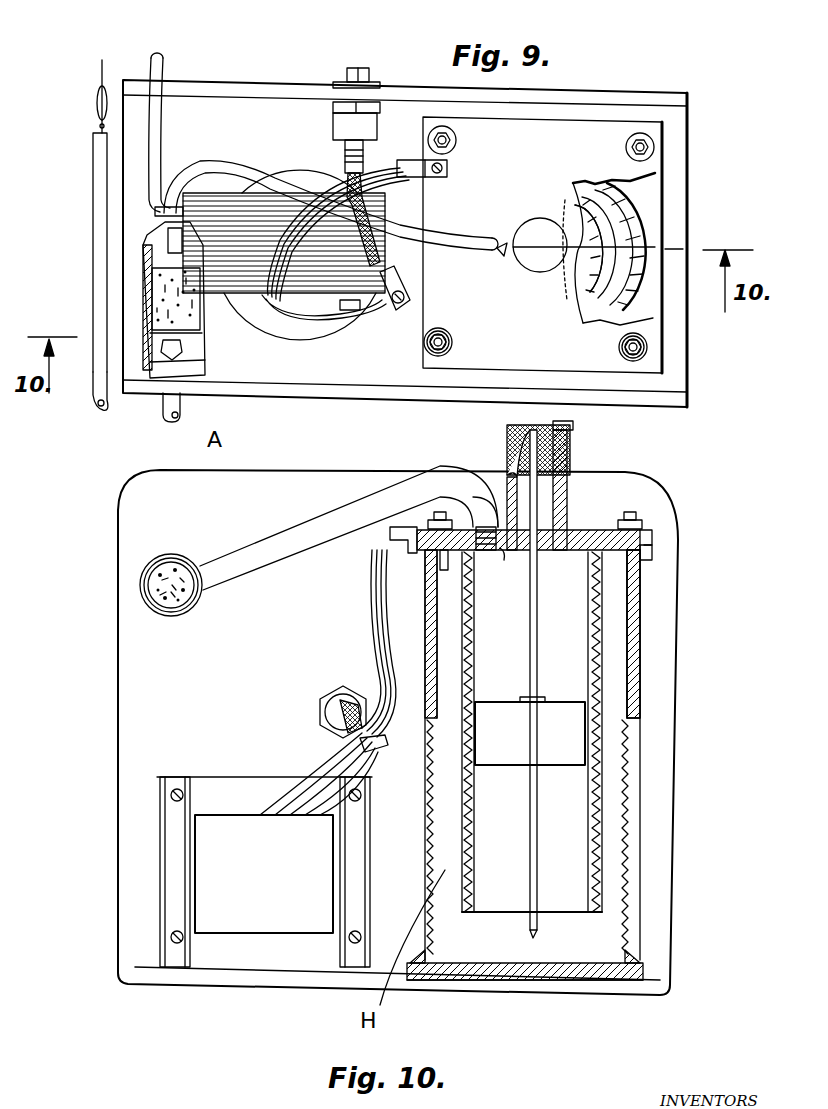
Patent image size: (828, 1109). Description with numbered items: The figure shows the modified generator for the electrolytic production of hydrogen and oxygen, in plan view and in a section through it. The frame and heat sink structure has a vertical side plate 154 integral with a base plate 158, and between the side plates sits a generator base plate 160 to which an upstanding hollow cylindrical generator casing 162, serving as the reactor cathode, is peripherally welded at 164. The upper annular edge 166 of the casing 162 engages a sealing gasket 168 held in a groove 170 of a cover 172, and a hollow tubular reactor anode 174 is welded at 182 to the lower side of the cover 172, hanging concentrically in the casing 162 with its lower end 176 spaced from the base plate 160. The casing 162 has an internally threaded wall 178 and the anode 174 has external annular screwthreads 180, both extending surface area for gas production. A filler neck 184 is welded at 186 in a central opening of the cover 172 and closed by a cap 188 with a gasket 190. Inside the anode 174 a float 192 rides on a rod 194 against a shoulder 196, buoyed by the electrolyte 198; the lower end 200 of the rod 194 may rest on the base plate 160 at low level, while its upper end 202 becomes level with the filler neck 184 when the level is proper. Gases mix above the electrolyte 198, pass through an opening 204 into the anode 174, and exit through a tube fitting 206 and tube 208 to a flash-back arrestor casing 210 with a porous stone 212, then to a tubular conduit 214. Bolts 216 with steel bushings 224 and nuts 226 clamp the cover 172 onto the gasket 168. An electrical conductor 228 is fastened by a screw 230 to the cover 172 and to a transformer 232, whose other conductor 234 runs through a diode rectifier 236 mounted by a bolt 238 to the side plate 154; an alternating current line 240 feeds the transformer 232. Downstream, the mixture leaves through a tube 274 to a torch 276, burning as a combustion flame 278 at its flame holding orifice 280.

In FIG. 10, the side plate 154 is at (126, 700).
In FIG. 10, the base plate 158 is at (235, 968).
In FIG. 10, the generator base plate 160 is at (555, 978).
In FIG. 9, the generator casing 162 is at (637, 217).
In FIG. 10, the generator casing 162 is at (625, 868).
In FIG. 10, the peripheral weld 164 is at (650, 957).
In FIG. 10, the upper annular edge 166 is at (642, 560).
In FIG. 10, the sealing gasket 168 is at (632, 527).
In FIG. 10, the groove 170 is at (644, 543).
In FIG. 9, the cover 172 is at (578, 137).
In FIG. 10, the cover 172 is at (583, 536).
In FIG. 9, the reactor anode 174 is at (650, 246).
In FIG. 10, the lower end of anode 176 is at (480, 965).
In FIG. 10, the internally threaded wall 178 is at (613, 813).
In FIG. 10, the external annular screwthreads 180 is at (605, 693).
In FIG. 10, the weld 182 is at (440, 565).
In FIG. 10, the filler neck 184 is at (558, 500).
In FIG. 10, the peripheral weld 186 is at (507, 548).
In FIG. 9, the cap 188 is at (545, 219).
In FIG. 10, the cap 188 is at (507, 448).
In FIG. 10, the gasket 190 is at (570, 433).
In FIG. 9, the float 192 is at (588, 317).
In FIG. 10, the float 192 is at (590, 727).
In FIG. 10, the rod 194 is at (533, 775).
In FIG. 10, the shoulder 196 is at (540, 697).
In FIG. 10, the electrolyte 198 is at (435, 720).
In FIG. 10, the lower end of rod 200 is at (533, 931).
In FIG. 10, the upper end of rod 202 is at (509, 433).
In FIG. 10, the opening 204 is at (557, 680).
In FIG. 10, the tube fitting 206 is at (480, 503).
In FIG. 9, the tube 208 is at (452, 248).
In FIG. 10, the tube 208 is at (372, 497).
In FIG. 9, the flash-back arrestor casing 210 is at (143, 250).
In FIG. 10, the flash-back arrestor casing 210 is at (150, 608).
In FIG. 9, the porous stone 212 is at (157, 298).
In FIG. 10, the porous stone 212 is at (183, 559).
In FIG. 9, the tubular conduit 214 is at (163, 408).
In FIG. 9, the bolts 216 is at (449, 140).
In FIG. 9, the steel bushings 224 is at (432, 355).
In FIG. 9, the nuts 226 is at (445, 351).
In FIG. 9, the electrical conductor 228 is at (392, 176).
In FIG. 10, the electrical conductor 228 is at (374, 550).
In FIG. 9, the screw 230 is at (447, 168).
In FIG. 10, the screw 230 is at (426, 519).
In FIG. 9, the transformer 232 is at (263, 180).
In FIG. 10, the transformer 232 is at (222, 815).
In FIG. 9, the conductor 234 is at (302, 322).
In FIG. 10, the conductor 234 is at (345, 748).
In FIG. 9, the diode rectifier 236 is at (337, 120).
In FIG. 10, the diode rectifier 236 is at (330, 700).
In FIG. 9, the bolt 238 is at (370, 76).
In FIG. 9, the alternating current line 240 is at (166, 66).
In FIG. 9, the tube 274 is at (96, 393).
In FIG. 9, the torch 276 is at (97, 195).
In FIG. 9, the combustion flame 278 is at (97, 100).
In FIG. 9, the flame holding orifice 280 is at (99, 128).